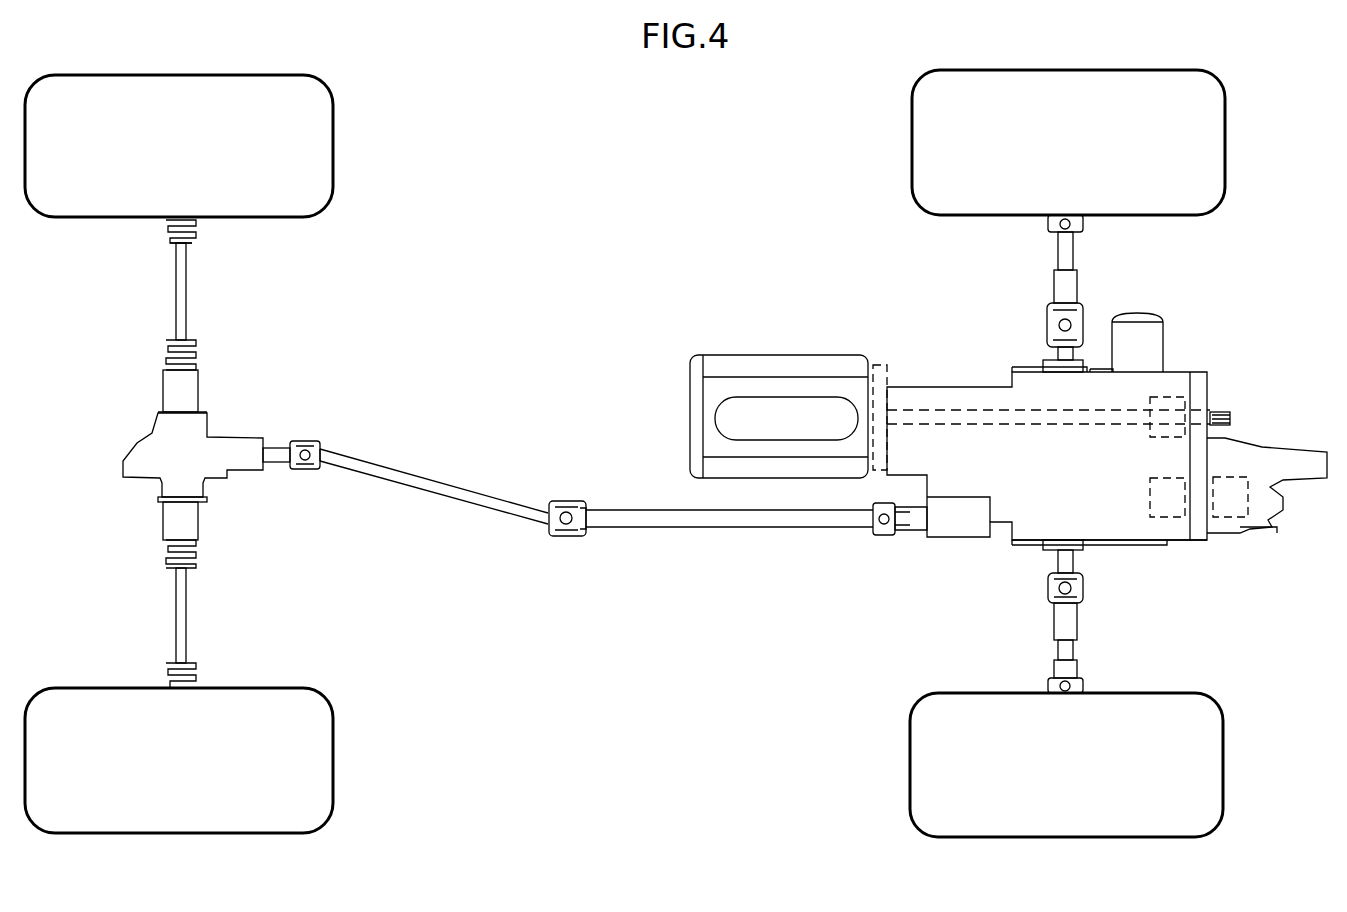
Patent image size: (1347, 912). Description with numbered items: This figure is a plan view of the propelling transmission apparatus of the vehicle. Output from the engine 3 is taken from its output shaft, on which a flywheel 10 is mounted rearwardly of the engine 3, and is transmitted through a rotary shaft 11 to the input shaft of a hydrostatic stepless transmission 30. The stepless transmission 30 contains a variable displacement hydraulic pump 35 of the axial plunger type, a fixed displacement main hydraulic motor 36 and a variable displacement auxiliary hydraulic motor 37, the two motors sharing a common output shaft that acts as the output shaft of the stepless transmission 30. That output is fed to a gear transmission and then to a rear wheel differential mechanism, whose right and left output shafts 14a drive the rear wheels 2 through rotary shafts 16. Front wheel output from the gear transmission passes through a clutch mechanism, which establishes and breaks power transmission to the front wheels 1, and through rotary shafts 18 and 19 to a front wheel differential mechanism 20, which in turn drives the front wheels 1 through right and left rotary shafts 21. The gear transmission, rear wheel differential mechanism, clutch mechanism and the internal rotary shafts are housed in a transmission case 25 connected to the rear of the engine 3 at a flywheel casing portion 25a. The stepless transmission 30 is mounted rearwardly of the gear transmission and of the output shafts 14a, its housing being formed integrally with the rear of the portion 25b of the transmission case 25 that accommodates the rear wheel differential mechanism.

The front wheels 1 is at (322, 157).
The rear wheels 2 is at (922, 145).
The engine 3 is at (790, 360).
The flywheel 10 is at (893, 438).
The rotary shaft 11 is at (1015, 422).
The output shafts 14a is at (1078, 360).
The rotary shafts 16 is at (1057, 258).
The rotary shaft 18 is at (658, 530).
The rotary shaft 19 is at (432, 490).
The front wheel differential mechanism 20 is at (143, 438).
The rotary shafts 21 is at (192, 290).
The transmission case 25 is at (973, 388).
The flywheel casing portion 25a is at (893, 368).
The portion of the transmission case 25b is at (1183, 540).
The hydrostatic stepless transmission 30 is at (1265, 437).
The variable displacement hydraulic pump 35 is at (1170, 397).
The main hydraulic motor 36 is at (1173, 517).
The auxiliary hydraulic motor 37 is at (1240, 517).